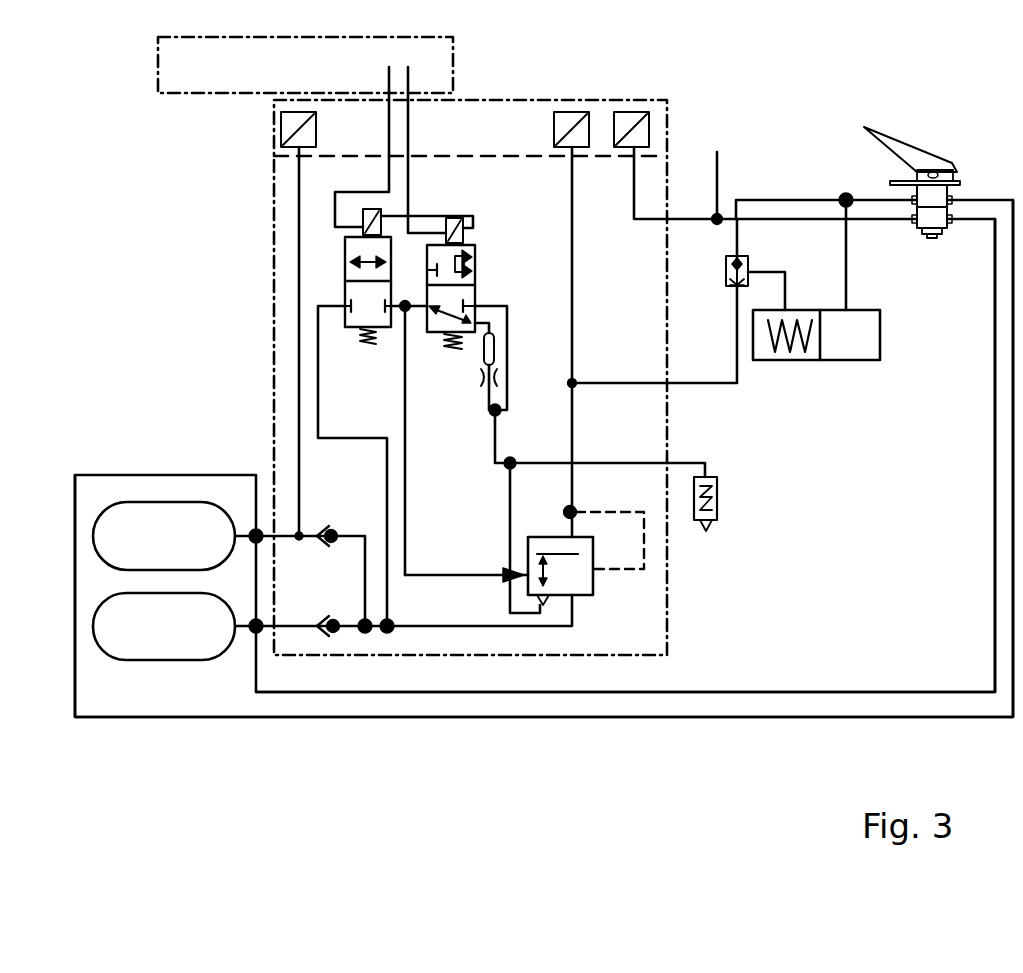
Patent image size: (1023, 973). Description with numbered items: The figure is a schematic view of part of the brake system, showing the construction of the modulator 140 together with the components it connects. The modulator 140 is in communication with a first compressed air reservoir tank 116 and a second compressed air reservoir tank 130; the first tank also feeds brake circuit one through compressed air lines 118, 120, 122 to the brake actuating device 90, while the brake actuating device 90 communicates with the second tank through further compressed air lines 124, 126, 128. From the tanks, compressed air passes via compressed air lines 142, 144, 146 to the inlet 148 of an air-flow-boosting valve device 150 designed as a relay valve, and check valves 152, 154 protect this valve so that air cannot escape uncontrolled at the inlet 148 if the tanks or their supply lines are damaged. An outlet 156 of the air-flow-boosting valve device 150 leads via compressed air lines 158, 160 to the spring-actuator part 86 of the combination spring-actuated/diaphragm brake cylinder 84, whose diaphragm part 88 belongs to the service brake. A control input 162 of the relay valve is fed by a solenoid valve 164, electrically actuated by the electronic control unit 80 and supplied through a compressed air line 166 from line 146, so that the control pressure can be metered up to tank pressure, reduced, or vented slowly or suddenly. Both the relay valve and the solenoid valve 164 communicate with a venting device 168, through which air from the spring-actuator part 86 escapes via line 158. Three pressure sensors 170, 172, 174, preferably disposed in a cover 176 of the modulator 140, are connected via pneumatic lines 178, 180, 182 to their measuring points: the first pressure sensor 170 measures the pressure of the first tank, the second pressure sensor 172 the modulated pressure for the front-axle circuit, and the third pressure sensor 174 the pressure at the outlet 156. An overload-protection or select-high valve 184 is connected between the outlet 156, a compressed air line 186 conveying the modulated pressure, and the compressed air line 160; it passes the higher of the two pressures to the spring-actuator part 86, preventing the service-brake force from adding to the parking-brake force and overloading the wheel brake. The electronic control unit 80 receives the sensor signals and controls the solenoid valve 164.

The electronic control unit 80 is at (322, 43).
The brake cylinder 84 is at (795, 303).
The spring-actuator part 86 is at (802, 360).
The diaphragm part 88 is at (853, 360).
The brake actuating device 90 is at (956, 162).
The compressed air reservoir tank 116 is at (186, 502).
The compressed air line 118 is at (544, 478).
The compressed air line 120 is at (544, 478).
The compressed air line 122 is at (512, 718).
The compressed air line 124 is at (625, 455).
The compressed air line 126 is at (625, 455).
The compressed air line 128 is at (682, 690).
The second compressed air reservoir tank 130 is at (202, 658).
The modulator 140 is at (668, 605).
The compressed air line 142 is at (282, 540).
The compressed air line 144 is at (282, 628).
The compressed air line 146 is at (444, 628).
The inlet 148 is at (576, 595).
The air-flow-boosting valve device 150 is at (550, 537).
The check valve 152 is at (334, 530).
The check valve 154 is at (330, 620).
The outlet 156 is at (576, 537).
The compressed air line 158 is at (572, 408).
The compressed air line 160 is at (758, 272).
The control input 162 is at (508, 575).
The solenoid valve 164 is at (424, 270).
The compressed air line 166 is at (340, 438).
The venting device 168 is at (716, 478).
The first pressure sensor 170 is at (281, 140).
The second pressure sensor 172 is at (632, 112).
The third pressure sensor 174 is at (572, 112).
The cover 176 is at (497, 99).
The pneumatic line 178 is at (301, 247).
The pneumatic line 180 is at (572, 280).
The pneumatic line 182 is at (710, 220).
The overload-protection valve 184 is at (731, 284).
The compressed air line 186 is at (790, 200).